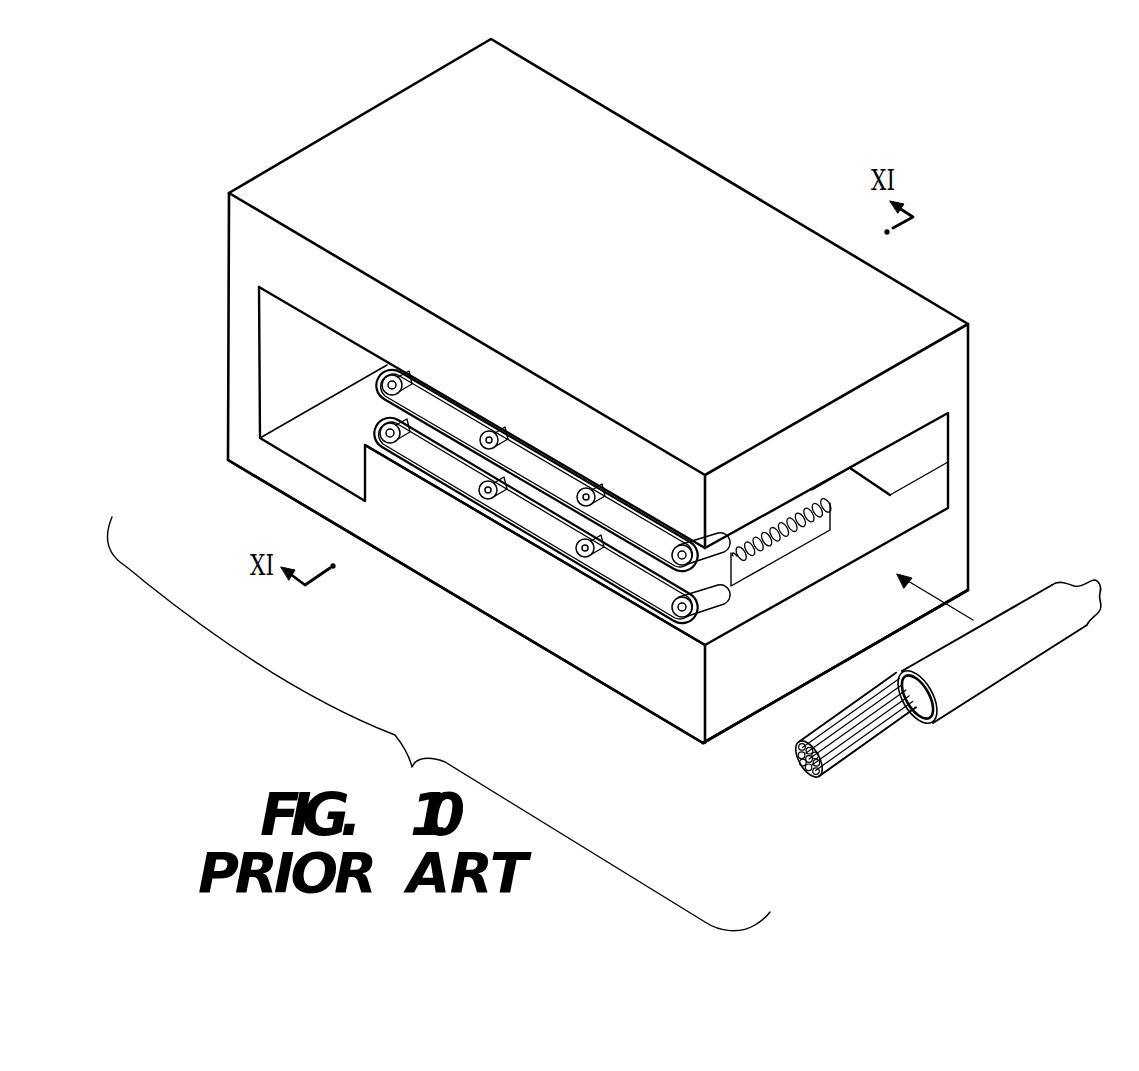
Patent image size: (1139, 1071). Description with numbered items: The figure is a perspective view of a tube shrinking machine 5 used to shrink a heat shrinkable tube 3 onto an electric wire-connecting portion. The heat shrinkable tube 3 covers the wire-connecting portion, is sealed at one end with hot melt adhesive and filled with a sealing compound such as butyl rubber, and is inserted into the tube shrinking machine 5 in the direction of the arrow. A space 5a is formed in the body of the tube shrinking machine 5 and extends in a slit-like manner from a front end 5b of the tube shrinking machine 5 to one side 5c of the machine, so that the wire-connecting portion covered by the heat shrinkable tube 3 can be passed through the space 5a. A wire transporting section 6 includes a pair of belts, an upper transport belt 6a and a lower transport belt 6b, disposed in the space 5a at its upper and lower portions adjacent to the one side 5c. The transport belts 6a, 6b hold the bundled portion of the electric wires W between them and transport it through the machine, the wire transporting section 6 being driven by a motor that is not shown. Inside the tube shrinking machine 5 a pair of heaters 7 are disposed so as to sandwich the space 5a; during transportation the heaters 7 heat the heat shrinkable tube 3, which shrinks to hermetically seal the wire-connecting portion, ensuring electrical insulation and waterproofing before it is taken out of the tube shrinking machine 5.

The tube shrinking machine 5 is at (718, 192).
The space 5a is at (913, 502).
The front end 5b is at (957, 360).
The one side 5c is at (648, 693).
The wire transporting section 6 is at (552, 544).
The upper transport belt 6a is at (533, 468).
The lower transport belt 6b is at (457, 475).
The heaters 7 is at (807, 532).
The heat shrinkable tube 3 is at (1007, 660).
The electric wires W is at (870, 715).